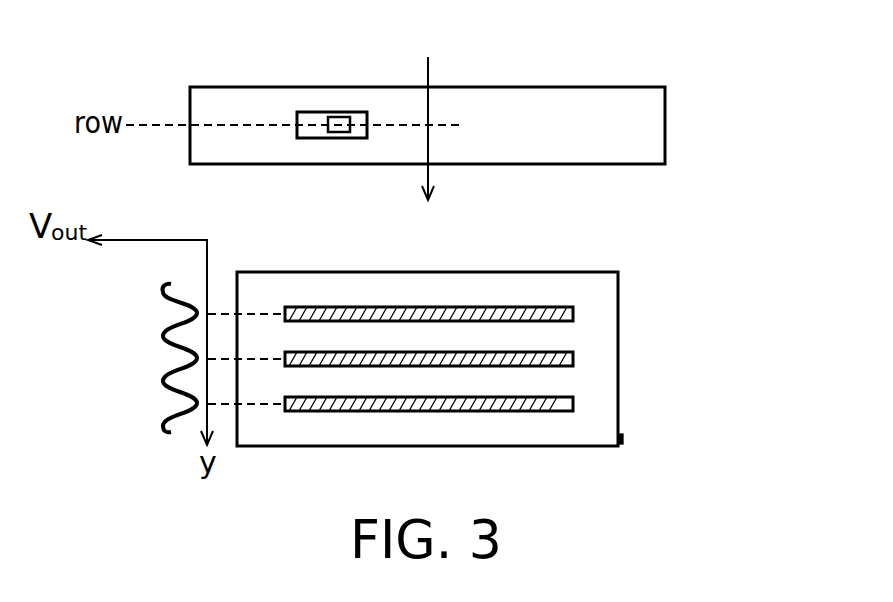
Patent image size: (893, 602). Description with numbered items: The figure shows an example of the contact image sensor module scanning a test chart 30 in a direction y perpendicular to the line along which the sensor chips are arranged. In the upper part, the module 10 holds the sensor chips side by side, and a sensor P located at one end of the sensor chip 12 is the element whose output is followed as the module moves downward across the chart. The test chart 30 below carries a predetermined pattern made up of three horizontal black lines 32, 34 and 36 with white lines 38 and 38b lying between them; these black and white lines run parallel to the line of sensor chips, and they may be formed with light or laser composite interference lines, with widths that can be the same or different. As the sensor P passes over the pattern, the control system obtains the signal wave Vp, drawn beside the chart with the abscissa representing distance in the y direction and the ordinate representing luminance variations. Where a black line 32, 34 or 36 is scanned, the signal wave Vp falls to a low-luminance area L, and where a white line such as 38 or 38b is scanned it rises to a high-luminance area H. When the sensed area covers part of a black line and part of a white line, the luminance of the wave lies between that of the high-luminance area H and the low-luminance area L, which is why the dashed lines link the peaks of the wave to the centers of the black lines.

The image sensor / pixel array 10 is at (665, 126).
The sensor chip 12 is at (366, 112).
The sensor P is at (335, 117).
The test chart 30 is at (624, 438).
The black line 32 is at (574, 314).
The black line 34 is at (574, 359).
The black line 36 is at (574, 404).
The white line 38 is at (548, 335).
The white line 38b is at (548, 383).
The low-luminance area L is at (178, 297).
The signal wave Vp is at (175, 303).
The high-luminance area H is at (165, 341).